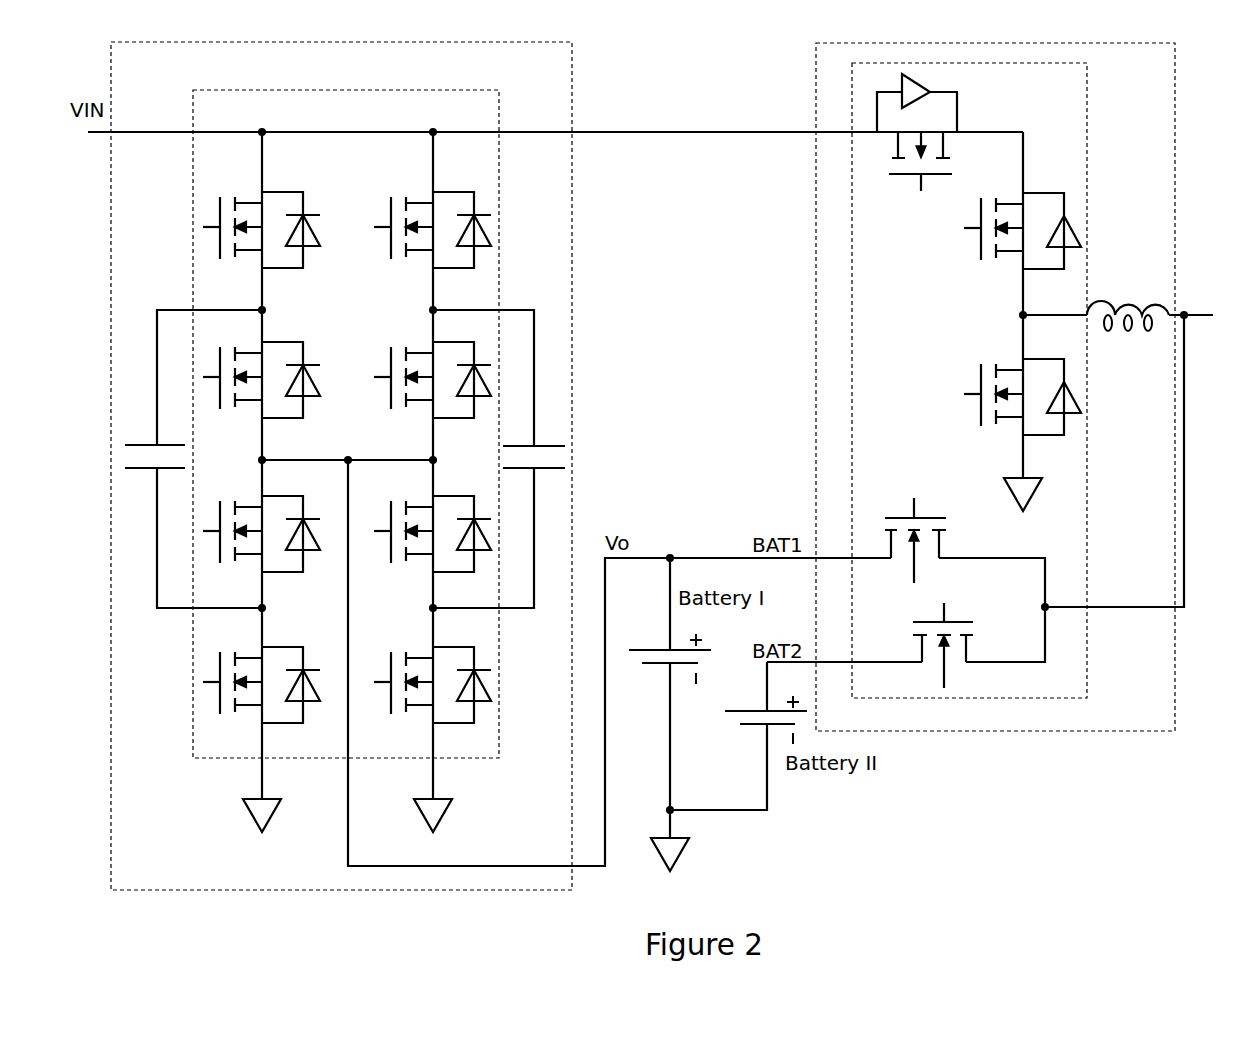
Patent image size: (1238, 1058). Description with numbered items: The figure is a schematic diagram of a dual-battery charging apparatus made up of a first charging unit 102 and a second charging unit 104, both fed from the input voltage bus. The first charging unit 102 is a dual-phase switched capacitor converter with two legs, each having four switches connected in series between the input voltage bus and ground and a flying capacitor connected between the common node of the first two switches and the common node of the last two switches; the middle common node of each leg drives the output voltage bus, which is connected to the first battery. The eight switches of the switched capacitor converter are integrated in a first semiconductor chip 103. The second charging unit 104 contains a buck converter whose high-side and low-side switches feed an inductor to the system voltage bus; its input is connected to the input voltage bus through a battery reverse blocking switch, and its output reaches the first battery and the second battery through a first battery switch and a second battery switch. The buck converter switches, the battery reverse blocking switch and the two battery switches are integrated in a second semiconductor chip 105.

The first charging unit 102 is at (561, 71).
The first semiconductor chip 103 is at (492, 120).
The second charging unit 104 is at (1164, 71).
The second semiconductor chip 105 is at (1077, 105).